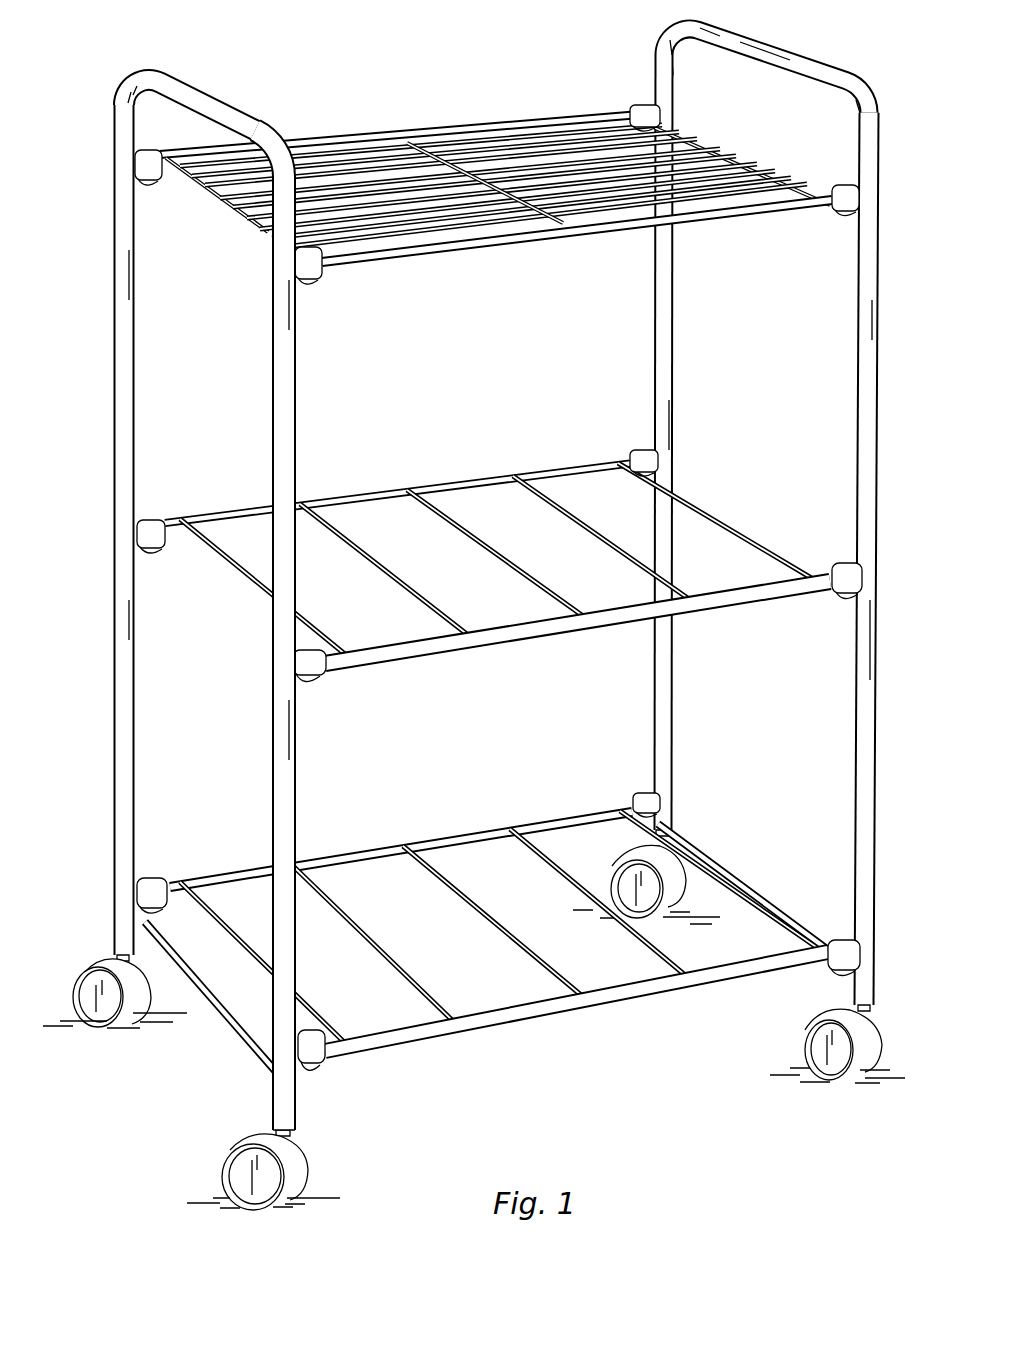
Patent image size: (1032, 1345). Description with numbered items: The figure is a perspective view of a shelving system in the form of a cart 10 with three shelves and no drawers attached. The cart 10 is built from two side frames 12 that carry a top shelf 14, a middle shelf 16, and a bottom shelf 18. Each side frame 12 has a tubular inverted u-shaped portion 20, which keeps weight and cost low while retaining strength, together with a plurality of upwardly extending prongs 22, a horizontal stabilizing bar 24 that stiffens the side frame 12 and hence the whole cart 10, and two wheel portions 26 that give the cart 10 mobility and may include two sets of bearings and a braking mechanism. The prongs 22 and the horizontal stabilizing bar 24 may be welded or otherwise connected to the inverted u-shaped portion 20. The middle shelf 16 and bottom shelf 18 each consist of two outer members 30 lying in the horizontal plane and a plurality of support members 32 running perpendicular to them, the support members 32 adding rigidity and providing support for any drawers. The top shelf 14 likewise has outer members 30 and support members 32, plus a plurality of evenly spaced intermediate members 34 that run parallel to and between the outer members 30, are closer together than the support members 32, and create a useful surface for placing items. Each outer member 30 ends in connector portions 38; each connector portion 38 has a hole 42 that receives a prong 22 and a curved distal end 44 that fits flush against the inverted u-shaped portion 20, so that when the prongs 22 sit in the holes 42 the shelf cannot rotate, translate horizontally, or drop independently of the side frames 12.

The cart 10 is at (881, 108).
The side frame 12 is at (137, 292).
The top shelf 14 is at (497, 190).
The middle shelf 16 is at (525, 535).
The bottom shelf 18 is at (498, 928).
The inverted u-shaped portion 20 is at (192, 78).
The prongs 22 is at (157, 185).
The horizontal stabilizing bar 24 is at (216, 1026).
The wheel portions 26 is at (100, 1032).
The outer members 30 is at (389, 487).
The support members 32 is at (605, 548).
The intermediate members 34 is at (385, 201).
The connector portions 38 is at (146, 518).
The hole 42 is at (837, 938).
The curved distal end 44 is at (864, 566).